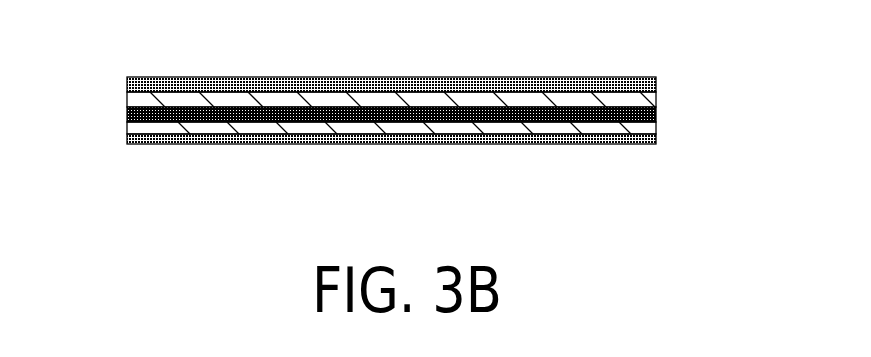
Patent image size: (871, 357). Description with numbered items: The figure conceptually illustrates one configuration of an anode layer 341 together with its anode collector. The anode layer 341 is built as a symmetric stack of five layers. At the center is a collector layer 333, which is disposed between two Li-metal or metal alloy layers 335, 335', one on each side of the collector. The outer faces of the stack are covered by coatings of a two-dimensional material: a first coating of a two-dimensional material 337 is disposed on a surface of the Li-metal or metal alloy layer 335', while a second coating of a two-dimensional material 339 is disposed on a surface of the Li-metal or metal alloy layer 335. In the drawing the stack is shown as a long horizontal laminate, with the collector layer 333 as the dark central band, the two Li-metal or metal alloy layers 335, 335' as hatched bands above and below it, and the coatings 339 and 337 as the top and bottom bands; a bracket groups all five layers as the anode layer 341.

The collector layer 333 is at (127, 110).
The Li-metal or metal alloy layer 335 is at (450, 103).
The Li-metal or metal alloy layer 335' is at (452, 123).
The first coating of a 2D material 337 is at (656, 138).
The second coating of a 2D material 339 is at (656, 86).
The anode layer 341 is at (438, 93).